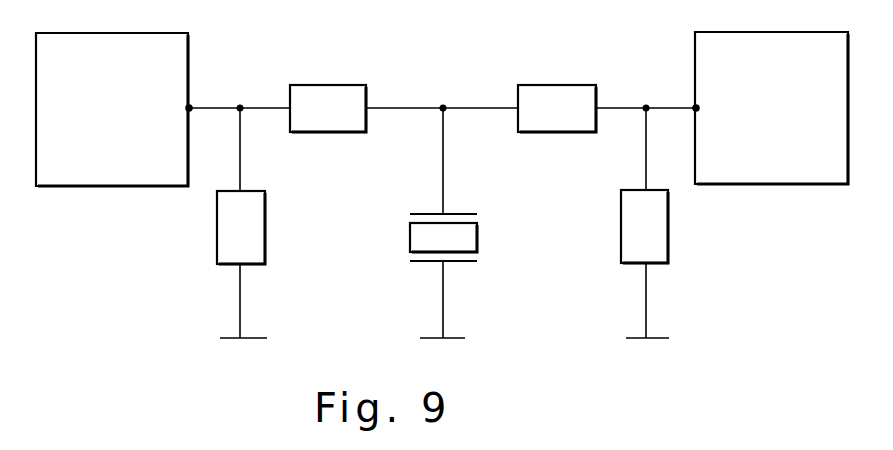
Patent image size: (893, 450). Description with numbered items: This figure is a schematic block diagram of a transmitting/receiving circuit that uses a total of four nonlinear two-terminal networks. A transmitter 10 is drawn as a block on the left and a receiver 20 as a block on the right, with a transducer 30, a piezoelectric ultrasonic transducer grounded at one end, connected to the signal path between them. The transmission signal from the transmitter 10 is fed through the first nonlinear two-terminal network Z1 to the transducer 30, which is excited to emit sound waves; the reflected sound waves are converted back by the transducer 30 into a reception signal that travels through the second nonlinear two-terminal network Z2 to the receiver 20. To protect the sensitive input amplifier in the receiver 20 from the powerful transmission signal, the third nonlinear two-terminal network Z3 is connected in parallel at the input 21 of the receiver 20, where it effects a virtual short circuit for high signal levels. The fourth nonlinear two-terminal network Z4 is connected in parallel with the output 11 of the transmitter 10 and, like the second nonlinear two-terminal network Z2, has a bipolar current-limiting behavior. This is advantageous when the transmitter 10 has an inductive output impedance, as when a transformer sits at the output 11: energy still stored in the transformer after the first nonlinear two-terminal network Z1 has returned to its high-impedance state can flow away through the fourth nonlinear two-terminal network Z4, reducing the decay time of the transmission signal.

The transmitter 10 is at (110, 180).
The output of the transmitter 11 is at (191, 106).
The receiver 20 is at (777, 178).
The input of the receiver 21 is at (695, 106).
The transducer 30 is at (478, 238).
The first nonlinear two-terminal network Z1 is at (313, 109).
The second nonlinear two-terminal network Z2 is at (541, 108).
The third nonlinear two-terminal network Z3 is at (660, 243).
The fourth nonlinear two-terminal network Z4 is at (253, 246).